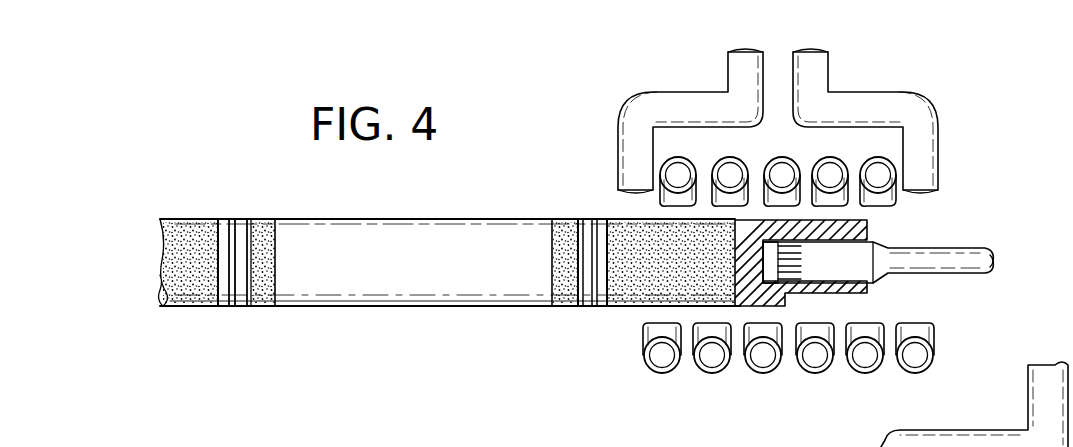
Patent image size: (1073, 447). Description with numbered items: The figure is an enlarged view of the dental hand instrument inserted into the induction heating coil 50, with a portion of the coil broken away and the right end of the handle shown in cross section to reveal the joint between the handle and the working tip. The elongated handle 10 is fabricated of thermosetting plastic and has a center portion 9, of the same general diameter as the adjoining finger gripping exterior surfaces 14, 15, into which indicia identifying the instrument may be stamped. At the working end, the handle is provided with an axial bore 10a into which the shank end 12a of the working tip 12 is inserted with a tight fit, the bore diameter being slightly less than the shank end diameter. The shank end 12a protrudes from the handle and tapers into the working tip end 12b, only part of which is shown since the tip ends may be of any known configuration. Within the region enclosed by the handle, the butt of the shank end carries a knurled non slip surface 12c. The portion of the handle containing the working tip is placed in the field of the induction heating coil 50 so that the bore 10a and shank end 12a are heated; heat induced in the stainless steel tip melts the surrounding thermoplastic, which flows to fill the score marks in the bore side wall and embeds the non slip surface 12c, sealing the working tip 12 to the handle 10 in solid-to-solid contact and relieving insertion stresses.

The handle 10 is at (463, 214).
The center portion 9 is at (435, 307).
The second finger gripping exterior surface 15 is at (197, 220).
The finger gripping exterior surface 14 is at (567, 307).
The axial bore 10a is at (777, 278).
The working tip 12 is at (988, 236).
The shank end 12a is at (865, 257).
The working tip end 12b is at (994, 270).
The non slip surface 12c is at (808, 255).
The induction heating coil 50 is at (831, 73).